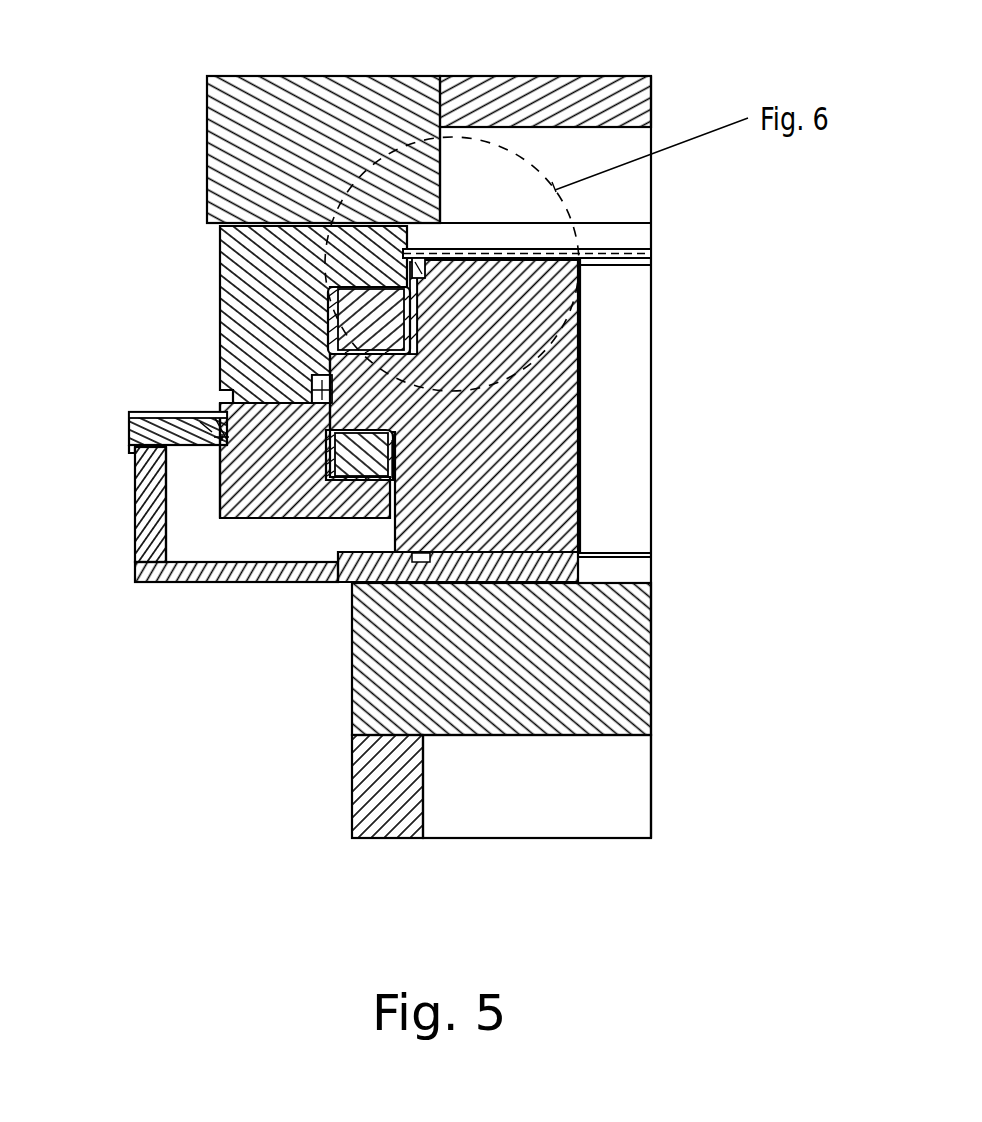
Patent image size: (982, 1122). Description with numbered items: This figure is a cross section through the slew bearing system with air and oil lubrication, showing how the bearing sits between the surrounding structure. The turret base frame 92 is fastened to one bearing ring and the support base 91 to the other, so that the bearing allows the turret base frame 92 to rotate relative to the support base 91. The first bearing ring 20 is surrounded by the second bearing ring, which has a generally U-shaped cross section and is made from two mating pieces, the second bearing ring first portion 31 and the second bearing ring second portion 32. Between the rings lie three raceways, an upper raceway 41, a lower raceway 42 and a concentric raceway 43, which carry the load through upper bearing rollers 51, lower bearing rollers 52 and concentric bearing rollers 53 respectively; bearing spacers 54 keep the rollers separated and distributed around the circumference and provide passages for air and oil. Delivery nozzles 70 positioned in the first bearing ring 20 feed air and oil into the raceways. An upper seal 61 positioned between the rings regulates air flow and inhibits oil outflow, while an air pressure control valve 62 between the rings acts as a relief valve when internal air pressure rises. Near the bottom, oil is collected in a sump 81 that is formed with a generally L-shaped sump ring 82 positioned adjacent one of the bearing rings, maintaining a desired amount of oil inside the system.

The first bearing ring 20 is at (567, 337).
The second bearing ring first portion 31 is at (222, 267).
The second bearing ring second portion 32 is at (210, 583).
The upper raceway 41 is at (385, 350).
The lower raceway 42 is at (282, 505).
The concentric raceway 43 is at (220, 470).
The upper bearing rollers 51 is at (378, 323).
The lower bearing rollers 52 is at (363, 477).
The concentric bearing rollers 53 is at (312, 392).
The bearing spacers 54 is at (417, 315).
The upper seal 61 is at (421, 262).
The air pressure control valve 62 is at (213, 413).
The delivery nozzles 70 is at (582, 301).
The sump 81 is at (191, 513).
The sump ring 82 is at (153, 583).
The support base 91 is at (613, 640).
The turret base frame 92 is at (215, 157).